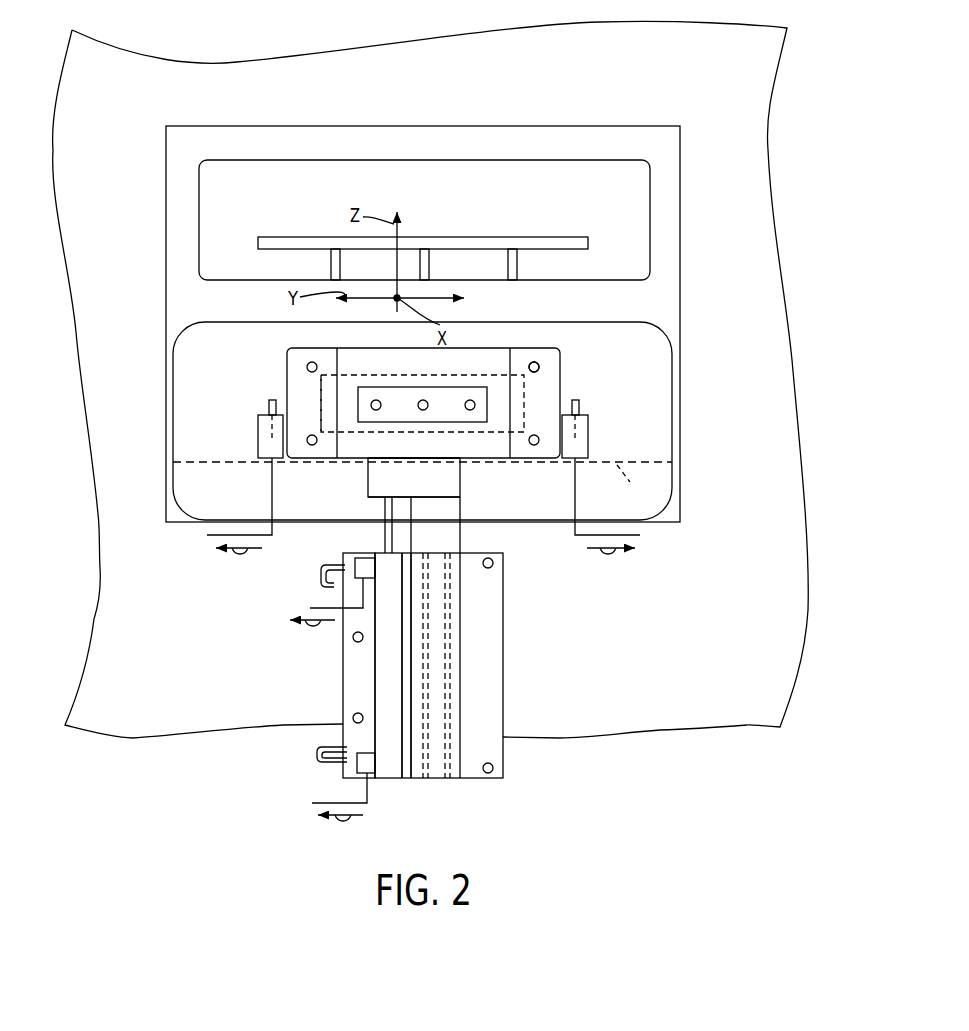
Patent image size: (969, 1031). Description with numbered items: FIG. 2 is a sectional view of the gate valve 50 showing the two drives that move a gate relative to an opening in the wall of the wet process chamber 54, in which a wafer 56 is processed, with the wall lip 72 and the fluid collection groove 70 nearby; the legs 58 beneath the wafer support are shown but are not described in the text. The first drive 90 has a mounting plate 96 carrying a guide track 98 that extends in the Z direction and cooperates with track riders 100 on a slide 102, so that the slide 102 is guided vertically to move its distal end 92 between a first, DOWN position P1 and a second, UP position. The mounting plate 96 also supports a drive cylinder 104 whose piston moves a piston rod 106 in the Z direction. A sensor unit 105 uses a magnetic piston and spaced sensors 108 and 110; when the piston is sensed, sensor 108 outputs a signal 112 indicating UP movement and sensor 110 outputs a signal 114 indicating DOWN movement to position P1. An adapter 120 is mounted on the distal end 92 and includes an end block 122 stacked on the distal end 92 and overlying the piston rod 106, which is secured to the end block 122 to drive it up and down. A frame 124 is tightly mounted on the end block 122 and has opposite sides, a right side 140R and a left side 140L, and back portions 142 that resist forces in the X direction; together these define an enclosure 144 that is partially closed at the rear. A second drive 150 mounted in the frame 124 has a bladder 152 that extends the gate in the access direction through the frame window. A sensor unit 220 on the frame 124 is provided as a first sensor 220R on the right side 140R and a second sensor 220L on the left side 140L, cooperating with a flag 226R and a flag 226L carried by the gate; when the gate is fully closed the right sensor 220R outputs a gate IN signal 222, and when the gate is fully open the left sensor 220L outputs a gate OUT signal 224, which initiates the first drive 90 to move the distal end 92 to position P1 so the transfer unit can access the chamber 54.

The fluid collection groove 70 is at (198, 126).
The wet process chamber 54 is at (625, 184).
The wafer 56 is at (450, 243).
The support legs 58 is at (517, 270).
The gate valve 50 is at (650, 355).
The second drive 150 is at (482, 361).
The left side 140L is at (287, 356).
The right side 140R is at (563, 368).
The back portions 142 is at (335, 368).
The enclosure 144 is at (342, 368).
The frame 124 is at (544, 393).
The bladder 152 is at (317, 395).
The second sensor 220L is at (257, 430).
The flag 226L is at (267, 405).
The first sensor 220R is at (588, 425).
The flag 226R is at (578, 408).
The sensor unit 220 is at (254, 459).
The lip 72 is at (628, 488).
The gate OUT signal 224 is at (240, 557).
The gate IN signal 222 is at (608, 557).
The end block 122 is at (385, 476).
The adapter 120 is at (456, 465).
The distal end 92 is at (455, 488).
The first position P1 is at (518, 498).
The piston rod 106 is at (388, 513).
The slide 102 is at (450, 530).
The first drive 90 is at (424, 697).
The mounting plate 96 is at (493, 653).
The guide track 98 is at (440, 685).
The track riders 100 is at (447, 740).
The drive cylinder 104 is at (390, 653).
The sensor 108 is at (364, 556).
The sensor 110 is at (360, 753).
The sensor unit 105 is at (359, 590).
The signal 112 is at (313, 627).
The signal 114 is at (343, 823).